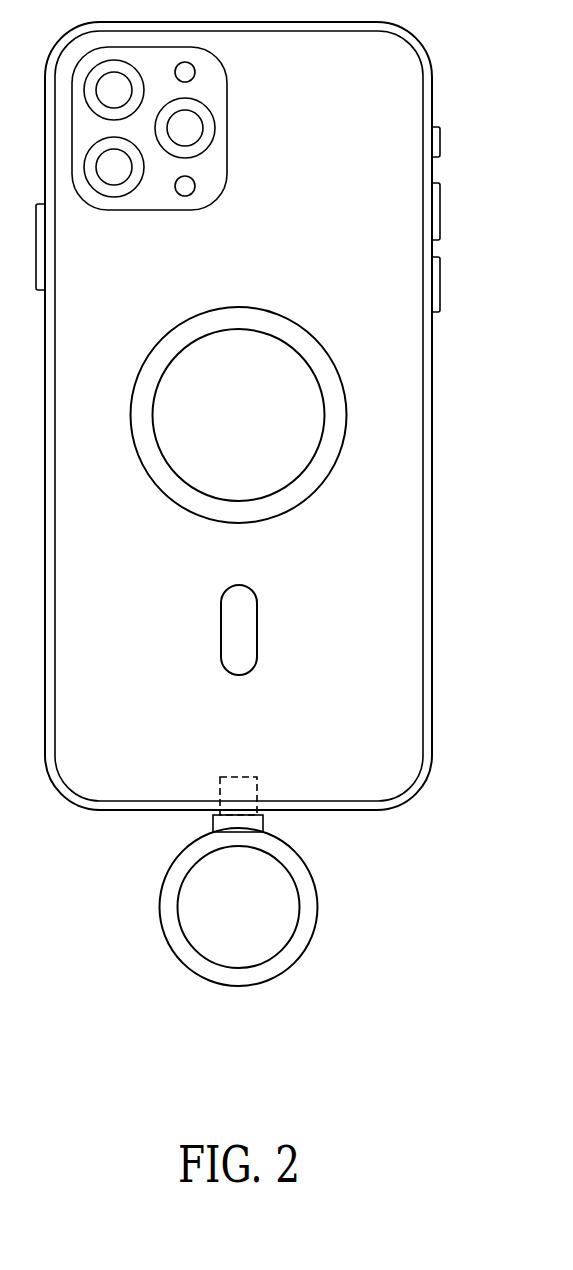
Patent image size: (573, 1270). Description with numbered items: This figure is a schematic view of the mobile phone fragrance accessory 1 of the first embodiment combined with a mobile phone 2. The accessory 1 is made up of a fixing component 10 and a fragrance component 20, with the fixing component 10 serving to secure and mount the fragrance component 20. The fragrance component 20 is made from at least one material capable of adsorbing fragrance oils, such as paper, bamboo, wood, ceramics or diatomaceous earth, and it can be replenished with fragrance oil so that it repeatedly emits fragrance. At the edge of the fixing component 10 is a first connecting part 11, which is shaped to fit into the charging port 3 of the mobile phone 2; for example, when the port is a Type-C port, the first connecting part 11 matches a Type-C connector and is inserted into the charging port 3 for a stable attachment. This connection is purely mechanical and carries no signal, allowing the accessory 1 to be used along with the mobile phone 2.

The mobile phone fragrance accessory 1 is at (218, 881).
The mobile phone 2 is at (378, 107).
The charging port 3 is at (234, 822).
The fixing component 10 is at (276, 907).
The first connecting part 11 is at (215, 822).
The fragrance component 20 is at (250, 932).